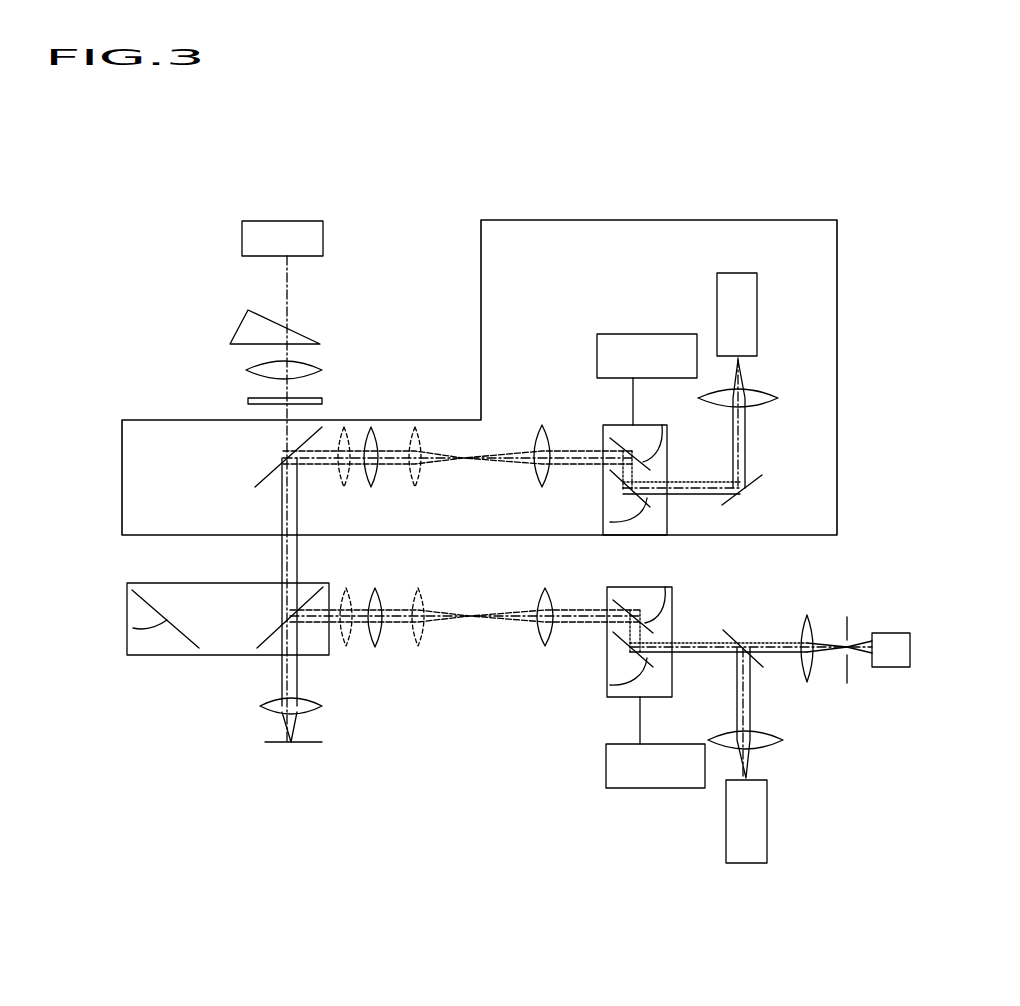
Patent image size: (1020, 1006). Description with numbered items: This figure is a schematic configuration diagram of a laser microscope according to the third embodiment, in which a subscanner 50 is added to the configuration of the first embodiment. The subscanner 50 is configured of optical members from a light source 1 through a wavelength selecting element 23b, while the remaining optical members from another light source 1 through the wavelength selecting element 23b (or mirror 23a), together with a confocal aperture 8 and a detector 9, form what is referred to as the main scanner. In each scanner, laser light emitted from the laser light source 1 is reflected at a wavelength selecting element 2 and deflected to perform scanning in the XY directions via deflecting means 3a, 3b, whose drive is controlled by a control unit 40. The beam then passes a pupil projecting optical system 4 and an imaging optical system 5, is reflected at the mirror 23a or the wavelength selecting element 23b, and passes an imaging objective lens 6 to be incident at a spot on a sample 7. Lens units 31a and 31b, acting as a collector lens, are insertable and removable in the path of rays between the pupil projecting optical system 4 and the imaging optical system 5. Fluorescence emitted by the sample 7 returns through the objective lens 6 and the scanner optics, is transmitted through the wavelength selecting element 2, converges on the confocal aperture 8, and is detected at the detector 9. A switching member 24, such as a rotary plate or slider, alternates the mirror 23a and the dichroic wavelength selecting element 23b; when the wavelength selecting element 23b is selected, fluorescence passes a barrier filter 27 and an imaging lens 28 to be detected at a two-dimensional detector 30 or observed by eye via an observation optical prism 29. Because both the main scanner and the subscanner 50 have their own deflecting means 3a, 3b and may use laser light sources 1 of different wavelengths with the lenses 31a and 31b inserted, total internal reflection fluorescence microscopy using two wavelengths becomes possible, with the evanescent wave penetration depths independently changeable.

The laser light source 1 is at (763, 312).
The wavelength selecting element 2 is at (752, 472).
The deflecting means 3a is at (610, 523).
The deflecting means 3b is at (662, 425).
The pupil projecting optical system 4 is at (542, 425).
The imaging optical system 5 is at (371, 487).
The imaging objective lens 6 is at (270, 707).
The sample 7 is at (270, 741).
The confocal aperture 8 is at (838, 612).
The detector 9 is at (888, 633).
The mirror 23a is at (133, 628).
The wavelength selecting element 23b is at (262, 478).
The switching member 24 is at (147, 582).
The barrier filter 27 is at (248, 401).
The imaging lens 28 is at (248, 367).
The observation optical prism 29 is at (232, 338).
The two-dimensional detector 30 is at (242, 233).
The lens unit 31a is at (437, 372).
The lens unit 31b is at (443, 703).
The control unit 40 is at (655, 334).
The subscanner 50 is at (745, 211).